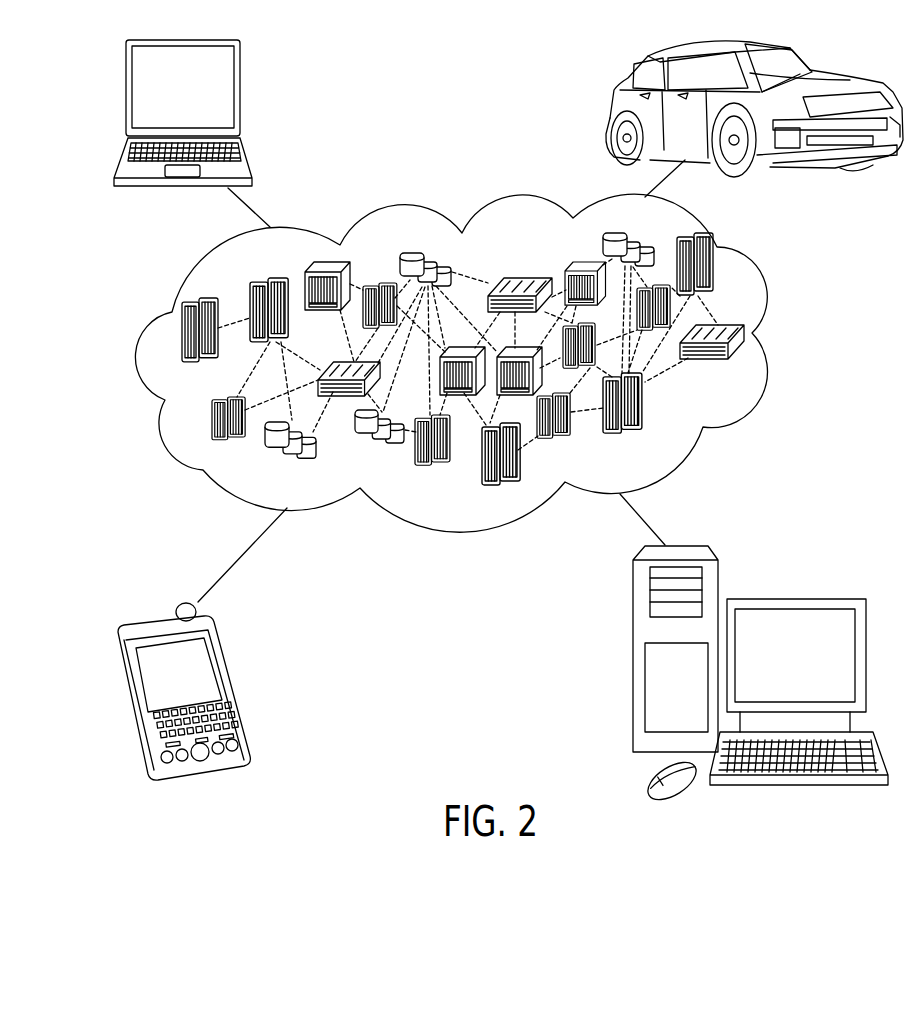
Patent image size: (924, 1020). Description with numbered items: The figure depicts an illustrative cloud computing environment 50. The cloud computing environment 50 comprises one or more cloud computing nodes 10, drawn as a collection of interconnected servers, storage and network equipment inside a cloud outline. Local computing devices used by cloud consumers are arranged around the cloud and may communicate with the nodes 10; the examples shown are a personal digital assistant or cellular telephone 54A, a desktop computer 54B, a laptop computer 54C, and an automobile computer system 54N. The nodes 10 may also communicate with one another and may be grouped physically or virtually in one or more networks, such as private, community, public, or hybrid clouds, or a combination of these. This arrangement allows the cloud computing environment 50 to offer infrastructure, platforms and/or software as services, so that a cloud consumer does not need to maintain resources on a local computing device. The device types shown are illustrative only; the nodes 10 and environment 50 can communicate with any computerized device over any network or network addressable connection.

The cloud computing node 10 is at (746, 366).
The cloud computing environment 50 is at (795, 340).
The personal digital assistant (PDA) or cellular telephone 54A is at (232, 686).
The desktop computer 54B is at (795, 598).
The laptop computer 54C is at (243, 97).
The automobile computer system 54N is at (607, 112).